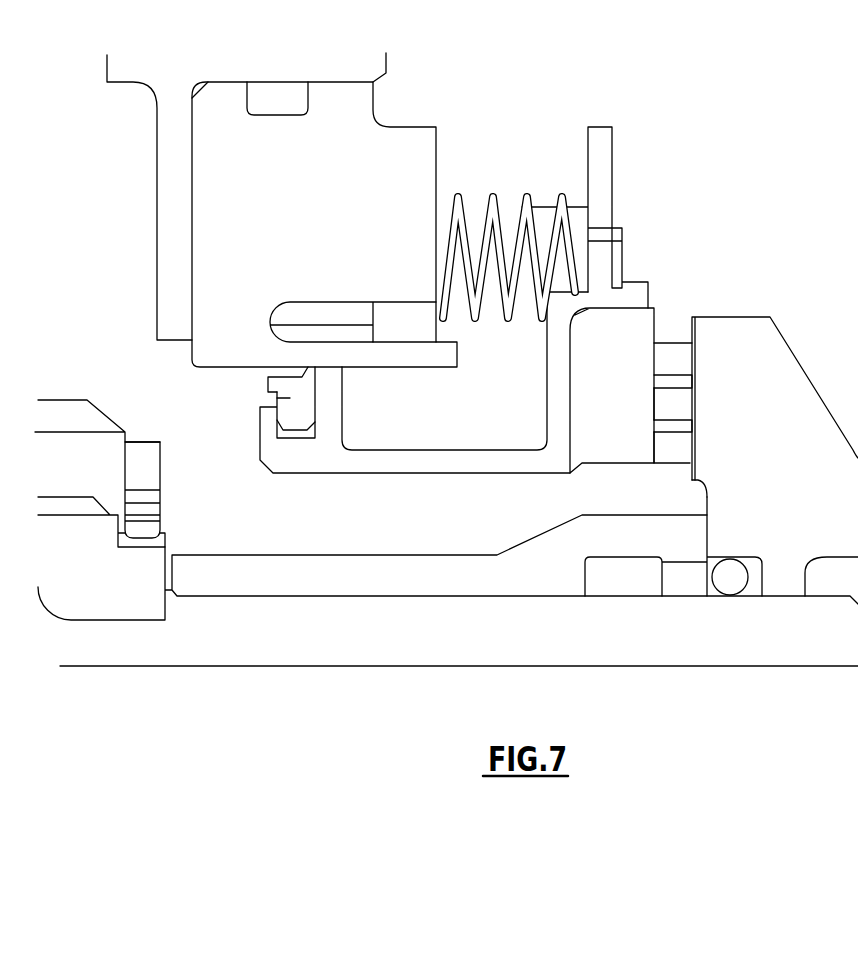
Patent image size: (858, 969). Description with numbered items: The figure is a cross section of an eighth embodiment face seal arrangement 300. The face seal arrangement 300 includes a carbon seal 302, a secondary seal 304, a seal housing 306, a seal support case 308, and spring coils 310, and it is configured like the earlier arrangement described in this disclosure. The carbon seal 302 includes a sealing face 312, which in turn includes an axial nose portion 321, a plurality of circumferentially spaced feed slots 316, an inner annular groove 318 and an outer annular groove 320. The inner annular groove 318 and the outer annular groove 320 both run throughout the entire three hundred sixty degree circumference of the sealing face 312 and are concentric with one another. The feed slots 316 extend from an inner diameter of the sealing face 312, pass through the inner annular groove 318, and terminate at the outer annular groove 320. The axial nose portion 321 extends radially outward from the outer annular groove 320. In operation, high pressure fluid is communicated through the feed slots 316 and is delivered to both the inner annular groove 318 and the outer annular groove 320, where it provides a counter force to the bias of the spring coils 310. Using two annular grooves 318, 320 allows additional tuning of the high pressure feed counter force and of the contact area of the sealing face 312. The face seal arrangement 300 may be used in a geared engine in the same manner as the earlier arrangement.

The face seal arrangement 300 is at (446, 352).
The carbon seal 302 is at (602, 447).
The secondary seal 304 is at (264, 398).
The seal housing 306 is at (430, 460).
The seal support case 308 is at (208, 352).
The spring coils 310 is at (496, 197).
The sealing face 312 is at (698, 408).
The feed slots 316 is at (663, 448).
The inner annular groove 318 is at (682, 427).
The outer annular groove 320 is at (682, 381).
The axial nose portion 321 is at (675, 358).